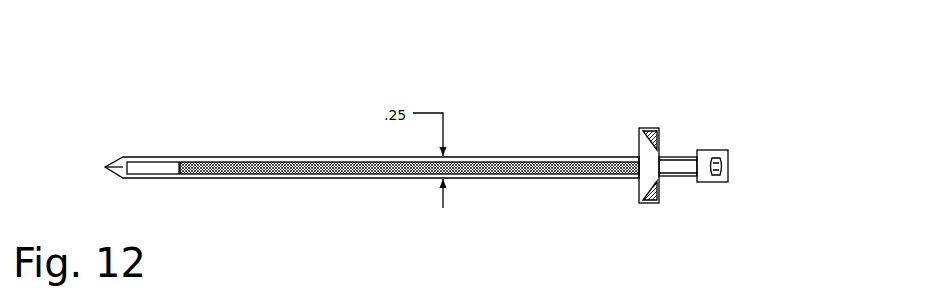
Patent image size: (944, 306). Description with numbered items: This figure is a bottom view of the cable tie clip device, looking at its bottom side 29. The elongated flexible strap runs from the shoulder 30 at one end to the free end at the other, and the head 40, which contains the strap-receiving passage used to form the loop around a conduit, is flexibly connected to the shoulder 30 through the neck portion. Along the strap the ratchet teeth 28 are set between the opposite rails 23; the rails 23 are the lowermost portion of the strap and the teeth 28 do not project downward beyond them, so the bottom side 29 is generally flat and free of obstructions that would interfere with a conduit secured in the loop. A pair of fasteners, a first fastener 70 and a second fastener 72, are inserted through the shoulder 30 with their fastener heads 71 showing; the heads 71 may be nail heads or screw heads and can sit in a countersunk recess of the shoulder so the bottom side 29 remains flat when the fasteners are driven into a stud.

The rails 23 is at (142, 159).
The ratchet teeth 28 is at (218, 159).
The bottom side 29 is at (176, 167).
The shoulder 30 is at (642, 125).
The head 40 is at (714, 129).
The fastener 70 is at (621, 137).
The fastener heads 71 is at (663, 140).
The fastener 72 is at (633, 202).